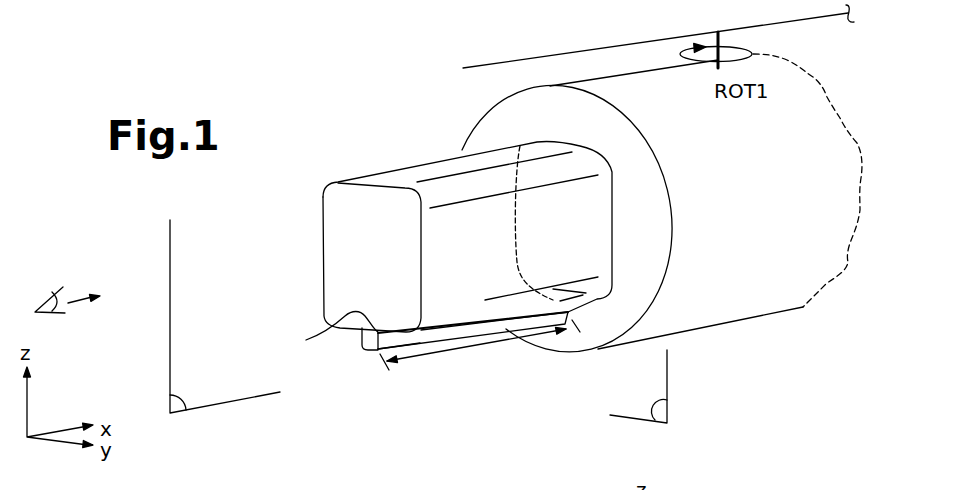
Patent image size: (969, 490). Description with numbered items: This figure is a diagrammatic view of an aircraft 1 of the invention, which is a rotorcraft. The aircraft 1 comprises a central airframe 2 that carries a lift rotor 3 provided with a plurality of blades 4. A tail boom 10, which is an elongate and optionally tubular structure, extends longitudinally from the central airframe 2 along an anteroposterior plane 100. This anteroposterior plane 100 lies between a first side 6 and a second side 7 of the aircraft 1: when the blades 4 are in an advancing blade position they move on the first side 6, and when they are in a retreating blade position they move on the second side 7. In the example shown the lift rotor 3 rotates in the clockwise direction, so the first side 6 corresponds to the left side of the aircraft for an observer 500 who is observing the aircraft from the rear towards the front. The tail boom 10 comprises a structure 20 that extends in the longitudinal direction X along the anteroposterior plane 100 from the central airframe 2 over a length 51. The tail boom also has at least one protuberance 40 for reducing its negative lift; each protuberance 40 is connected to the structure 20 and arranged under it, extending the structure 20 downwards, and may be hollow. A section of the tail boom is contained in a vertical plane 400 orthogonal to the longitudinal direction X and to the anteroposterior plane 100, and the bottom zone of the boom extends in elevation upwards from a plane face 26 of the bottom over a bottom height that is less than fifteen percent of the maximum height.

The aircraft 1 is at (803, 340).
The central airframe 2 is at (680, 318).
The lift rotor 3 is at (445, 77).
The blades 4 is at (490, 65).
The first side 6 is at (300, 266).
The second side 7 is at (520, 358).
The tail boom 10 is at (430, 376).
The structure 20 is at (320, 207).
The plane face 26 is at (306, 340).
The protuberance 40 is at (354, 345).
The length 51 is at (480, 347).
The anteroposterior plane 100 is at (210, 407).
The vertical plane 400 is at (658, 416).
The observer 500 is at (47, 298).